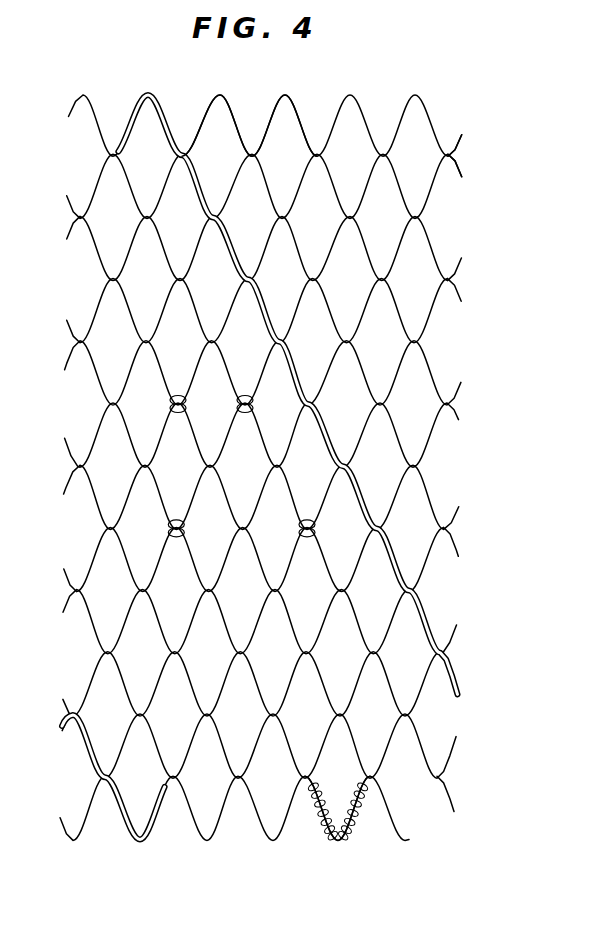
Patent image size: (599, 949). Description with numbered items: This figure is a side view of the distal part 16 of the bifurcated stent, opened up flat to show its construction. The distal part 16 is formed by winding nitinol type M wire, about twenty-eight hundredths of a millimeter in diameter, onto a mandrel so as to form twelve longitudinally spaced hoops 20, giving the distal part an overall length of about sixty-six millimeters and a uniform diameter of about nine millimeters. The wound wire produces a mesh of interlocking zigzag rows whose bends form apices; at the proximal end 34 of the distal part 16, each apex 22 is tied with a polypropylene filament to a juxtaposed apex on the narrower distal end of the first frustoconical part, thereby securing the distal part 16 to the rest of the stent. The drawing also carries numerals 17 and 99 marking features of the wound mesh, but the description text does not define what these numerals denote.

The distal part 16 is at (443, 467).
The coil spring at end loop 17 is at (345, 845).
The hoops 20 is at (461, 179).
The apex 22 is at (285, 94).
The proximal end 34 is at (320, 105).
The connector rings 99 is at (188, 379).